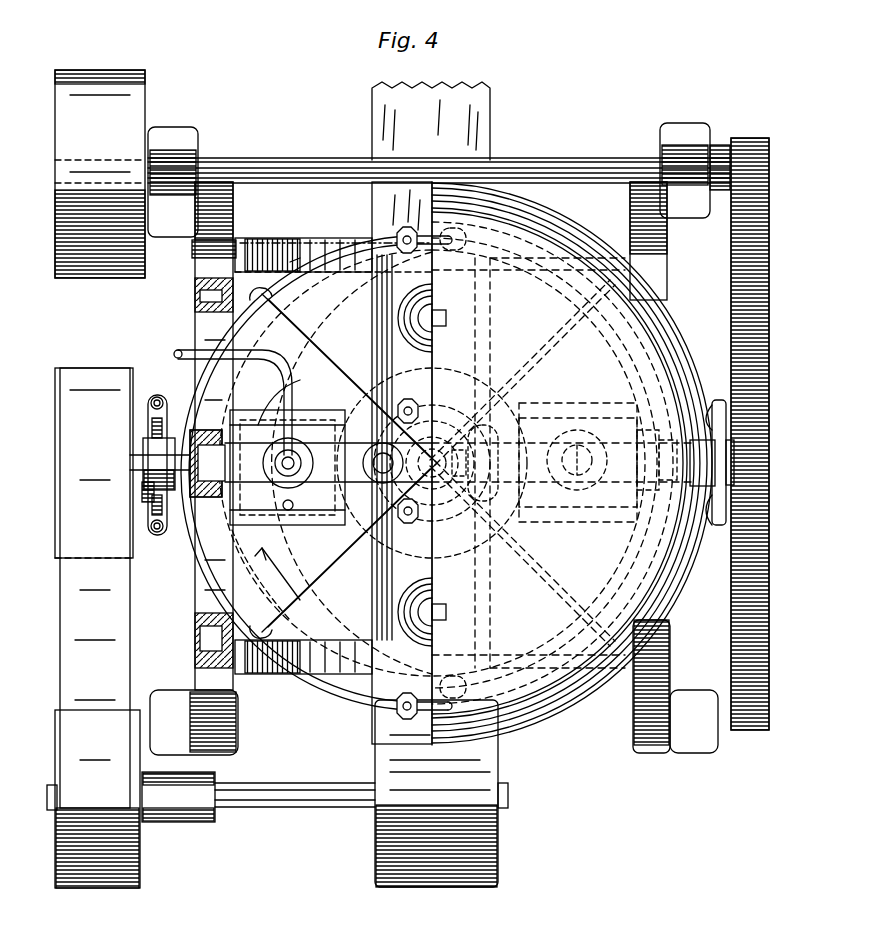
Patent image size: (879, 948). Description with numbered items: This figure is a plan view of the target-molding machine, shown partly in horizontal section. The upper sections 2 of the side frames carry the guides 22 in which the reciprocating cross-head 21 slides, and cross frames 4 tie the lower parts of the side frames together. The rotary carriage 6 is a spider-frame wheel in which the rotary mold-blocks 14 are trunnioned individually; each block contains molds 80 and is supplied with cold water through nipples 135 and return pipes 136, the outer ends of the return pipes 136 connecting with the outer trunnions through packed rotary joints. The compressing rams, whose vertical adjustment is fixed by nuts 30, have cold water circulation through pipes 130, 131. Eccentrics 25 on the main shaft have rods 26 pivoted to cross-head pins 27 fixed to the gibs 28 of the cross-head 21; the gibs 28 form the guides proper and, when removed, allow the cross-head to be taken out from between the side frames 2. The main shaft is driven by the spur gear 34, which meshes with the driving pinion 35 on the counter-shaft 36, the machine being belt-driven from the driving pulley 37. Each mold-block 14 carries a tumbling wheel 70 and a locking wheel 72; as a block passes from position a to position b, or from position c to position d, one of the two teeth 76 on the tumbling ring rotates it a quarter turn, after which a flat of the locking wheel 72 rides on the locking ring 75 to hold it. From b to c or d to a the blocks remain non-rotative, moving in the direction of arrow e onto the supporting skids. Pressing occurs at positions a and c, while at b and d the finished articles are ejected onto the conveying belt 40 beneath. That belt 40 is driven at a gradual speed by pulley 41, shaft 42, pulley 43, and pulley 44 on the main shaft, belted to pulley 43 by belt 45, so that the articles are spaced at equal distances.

The upper section of side frame 2 is at (195, 292).
The cross frame 4 is at (270, 252).
The rotary carriage 6 is at (322, 268).
The rotary mold-block 14 is at (376, 290).
The cross-head 21 is at (470, 463).
The guide 22 is at (200, 445).
The eccentric 25 is at (150, 430).
The eccentric rod 26 is at (148, 500).
The cross-head pin 27 is at (143, 480).
The gib 28 is at (200, 498).
The nut 30 is at (287, 467).
The spur gear 34 is at (768, 270).
The driving pinion 35 is at (740, 140).
The counter-shaft 36 is at (585, 160).
The driving pulley 37 is at (100, 174).
The conveying belt 40 is at (435, 484).
The pulley 41 is at (500, 822).
The shaft 42 is at (290, 805).
The pulley 43 is at (138, 710).
The pulley 44 is at (55, 372).
The belt 45 is at (95, 588).
The tumbling wheel 70 is at (293, 395).
The locking wheel 72 is at (387, 322).
The locking ring 75 is at (600, 540).
The tooth 76 is at (452, 330).
The mold 80 is at (398, 300).
The pipe 130 is at (205, 350).
The pipe 131 is at (175, 352).
The nipple 135 is at (415, 463).
The return pipe 136 is at (262, 302).
The position a is at (246, 382).
The position b is at (357, 274).
The position c is at (598, 462).
The position d is at (457, 627).
The arrow e is at (266, 575).